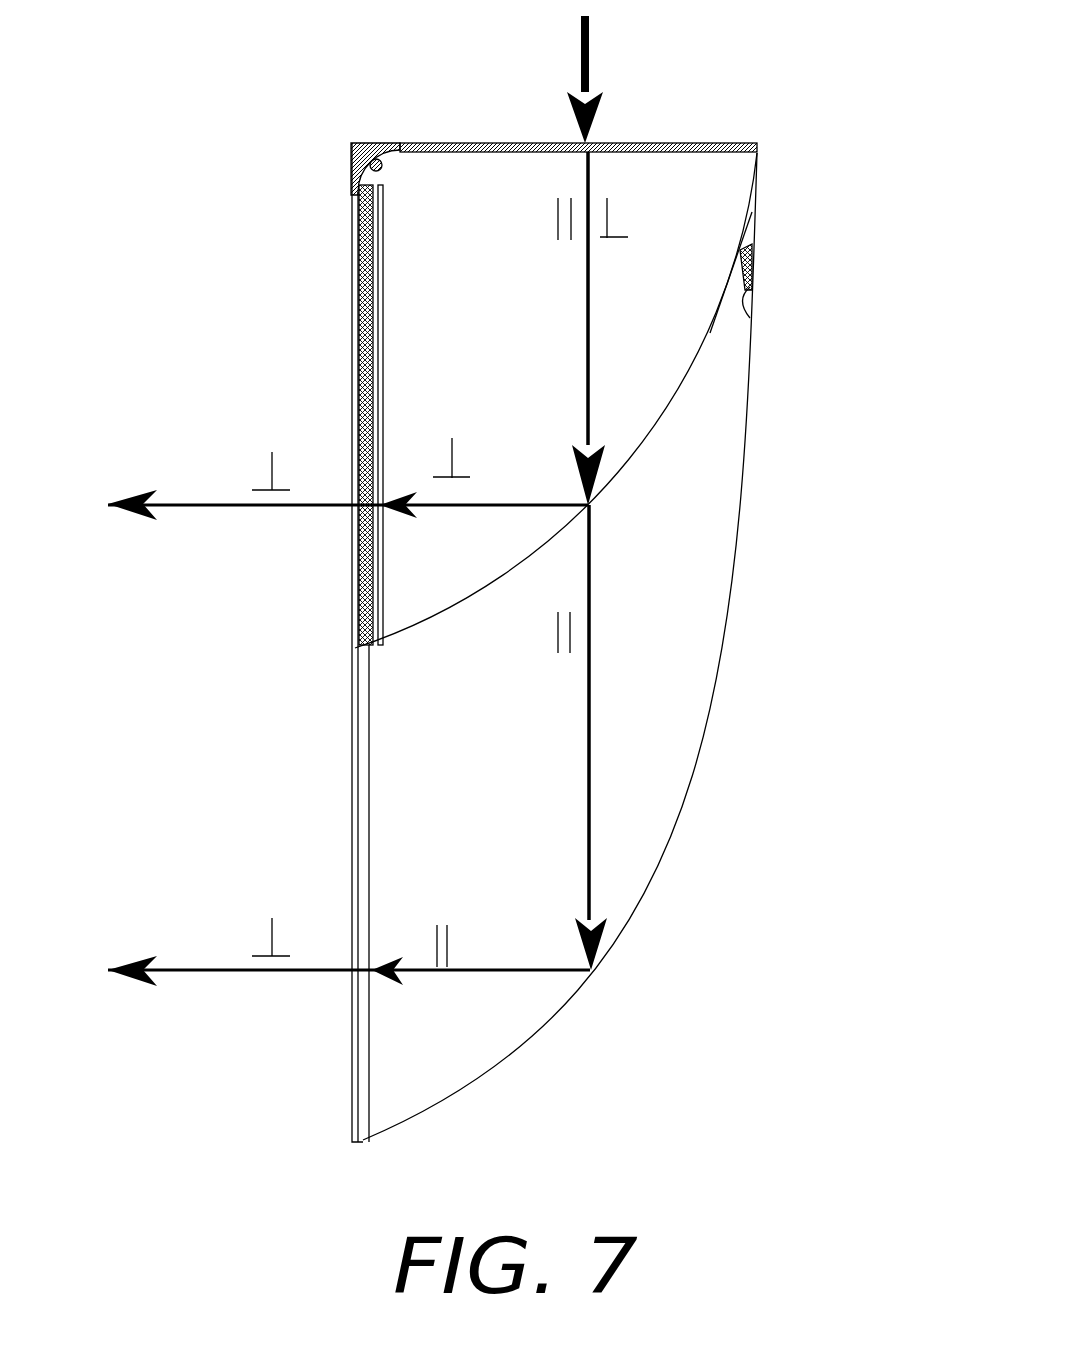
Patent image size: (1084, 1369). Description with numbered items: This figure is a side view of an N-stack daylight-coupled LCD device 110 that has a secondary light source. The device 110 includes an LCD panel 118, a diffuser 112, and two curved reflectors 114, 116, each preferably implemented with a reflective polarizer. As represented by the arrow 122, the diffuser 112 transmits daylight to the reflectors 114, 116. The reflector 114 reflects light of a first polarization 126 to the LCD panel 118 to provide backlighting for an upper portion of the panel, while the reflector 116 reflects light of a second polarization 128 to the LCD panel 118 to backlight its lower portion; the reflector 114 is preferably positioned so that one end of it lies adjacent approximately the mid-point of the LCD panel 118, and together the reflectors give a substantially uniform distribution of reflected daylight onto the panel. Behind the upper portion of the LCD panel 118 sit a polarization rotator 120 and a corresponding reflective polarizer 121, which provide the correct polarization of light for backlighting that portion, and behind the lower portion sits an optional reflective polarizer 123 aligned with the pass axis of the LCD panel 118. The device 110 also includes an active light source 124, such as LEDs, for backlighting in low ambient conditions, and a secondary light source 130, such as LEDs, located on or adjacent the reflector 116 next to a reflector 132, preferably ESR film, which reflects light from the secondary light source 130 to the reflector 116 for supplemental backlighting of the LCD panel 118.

The N-stack daylight-coupled LCD device 110 is at (780, 50).
The diffuser 112 is at (690, 142).
The curved reflector 114 is at (640, 440).
The curved reflector 116 is at (708, 732).
The LCD panel 118 is at (352, 745).
The polarization rotator 120 is at (370, 352).
The reflective polarizer 121 is at (382, 270).
The arrow 122 is at (583, 43).
The reflective polarizer 123 is at (367, 807).
The active light source 124 is at (365, 147).
The light of a first polarization 126 is at (520, 503).
The light of a second polarization 128 is at (520, 968).
The secondary light source 130 is at (750, 318).
The reflector 132 is at (715, 293).